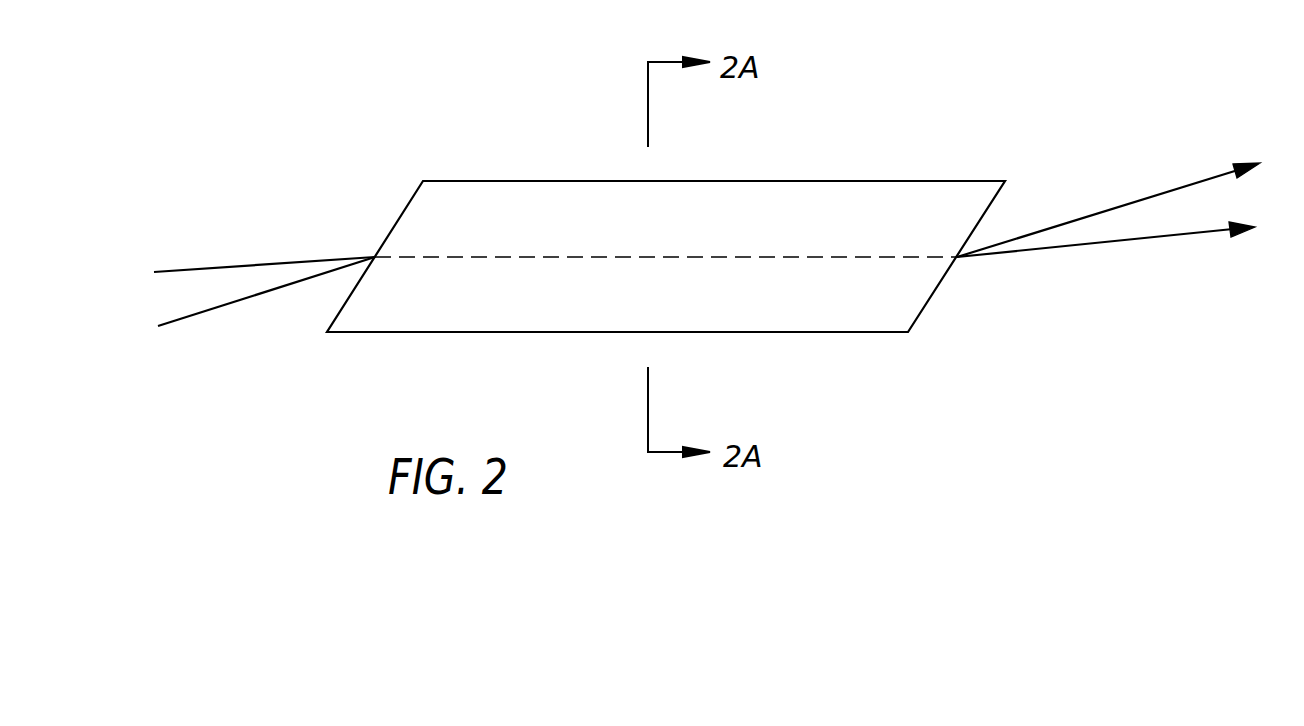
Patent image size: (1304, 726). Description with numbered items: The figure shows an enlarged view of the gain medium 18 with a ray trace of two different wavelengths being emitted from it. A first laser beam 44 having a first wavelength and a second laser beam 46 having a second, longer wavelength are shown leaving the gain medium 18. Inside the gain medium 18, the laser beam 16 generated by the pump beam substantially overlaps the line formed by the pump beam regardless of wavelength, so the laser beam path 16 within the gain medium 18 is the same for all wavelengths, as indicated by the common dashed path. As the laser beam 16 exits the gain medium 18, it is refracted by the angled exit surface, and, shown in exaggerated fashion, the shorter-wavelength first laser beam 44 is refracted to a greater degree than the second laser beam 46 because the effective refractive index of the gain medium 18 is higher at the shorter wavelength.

The laser beam 16 is at (567, 257).
The gain medium 18 is at (404, 332).
The first laser beam 44 is at (195, 313).
The second laser beam 46 is at (190, 268).